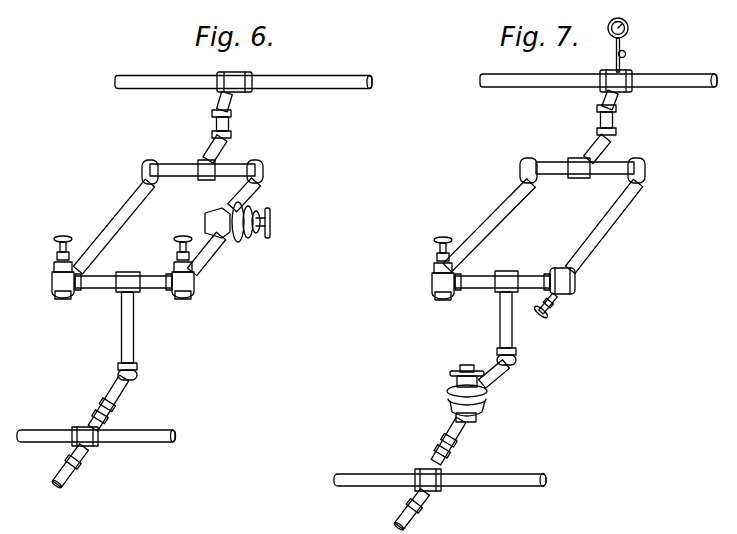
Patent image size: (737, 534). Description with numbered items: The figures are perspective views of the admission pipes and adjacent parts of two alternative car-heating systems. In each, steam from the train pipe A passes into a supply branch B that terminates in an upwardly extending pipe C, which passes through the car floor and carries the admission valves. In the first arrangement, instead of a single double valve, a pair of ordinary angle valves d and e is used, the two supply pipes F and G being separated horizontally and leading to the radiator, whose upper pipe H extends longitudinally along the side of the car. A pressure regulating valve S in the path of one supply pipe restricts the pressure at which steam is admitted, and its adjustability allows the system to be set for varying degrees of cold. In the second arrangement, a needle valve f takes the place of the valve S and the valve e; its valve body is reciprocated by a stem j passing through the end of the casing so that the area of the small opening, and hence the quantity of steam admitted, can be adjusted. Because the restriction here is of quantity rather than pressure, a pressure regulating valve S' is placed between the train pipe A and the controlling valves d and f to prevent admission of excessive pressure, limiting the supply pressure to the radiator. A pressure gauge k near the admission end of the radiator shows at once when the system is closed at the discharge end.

In FIG. 6, the train pipe A is at (147, 440).
In FIG. 7, the train pipe A is at (508, 478).
In FIG. 6, the supply branch B is at (122, 393).
In FIG. 7, the supply branch B is at (462, 437).
In FIG. 6, the upwardly extending pipe C is at (133, 318).
In FIG. 7, the upwardly extending pipe C is at (500, 318).
In FIG. 6, the angle valve d is at (52, 283).
In FIG. 7, the angle valve d is at (432, 283).
In FIG. 6, the angle valve e is at (191, 283).
In FIG. 7, the needle valve f is at (568, 284).
In FIG. 7, the stem j is at (549, 315).
In FIG. 7, the pressure gauge k is at (628, 32).
In FIG. 6, the supply pipe F is at (119, 207).
In FIG. 7, the supply pipe F is at (505, 216).
In FIG. 6, the supply pipe G is at (252, 186).
In FIG. 7, the supply pipe G is at (615, 210).
In FIG. 6, the upper pipe H is at (290, 86).
In FIG. 6, the pressure regulating valve S is at (237, 239).
In FIG. 7, the pressure regulating valve S' is at (488, 393).